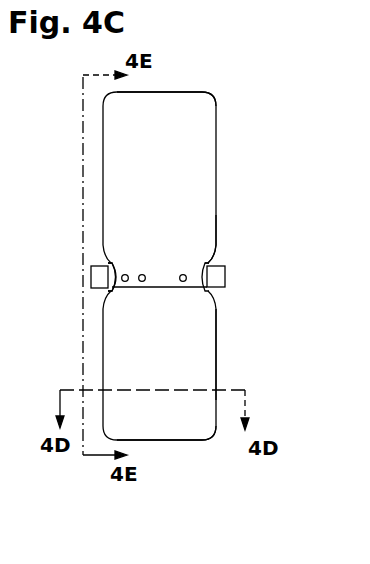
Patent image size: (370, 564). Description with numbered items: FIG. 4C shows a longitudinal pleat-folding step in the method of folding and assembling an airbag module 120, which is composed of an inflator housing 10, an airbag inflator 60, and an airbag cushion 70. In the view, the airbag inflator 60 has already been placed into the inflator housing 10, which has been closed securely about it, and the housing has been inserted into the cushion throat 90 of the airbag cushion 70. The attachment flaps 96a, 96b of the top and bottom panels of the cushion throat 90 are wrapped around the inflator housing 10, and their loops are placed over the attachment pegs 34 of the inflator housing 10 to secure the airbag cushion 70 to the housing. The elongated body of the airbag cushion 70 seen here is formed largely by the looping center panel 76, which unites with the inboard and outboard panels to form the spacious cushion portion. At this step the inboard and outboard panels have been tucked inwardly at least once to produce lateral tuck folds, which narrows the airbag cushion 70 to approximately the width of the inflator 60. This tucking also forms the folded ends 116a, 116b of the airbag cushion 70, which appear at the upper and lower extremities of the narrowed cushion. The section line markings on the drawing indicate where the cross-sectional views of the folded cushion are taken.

The inflator housing 10 is at (233, 260).
The attachment pegs 34 is at (183, 274).
The airbag inflator 60 is at (223, 287).
The airbag cushion 70 is at (222, 240).
The looping center panel 76 is at (205, 349).
The cushion throat 90 is at (92, 241).
The attachment flap 96a is at (127, 271).
The attachment flap 96b is at (126, 295).
The folded end 116a is at (194, 115).
The folded end 116b is at (190, 430).
The airbag module 120 is at (260, 112).